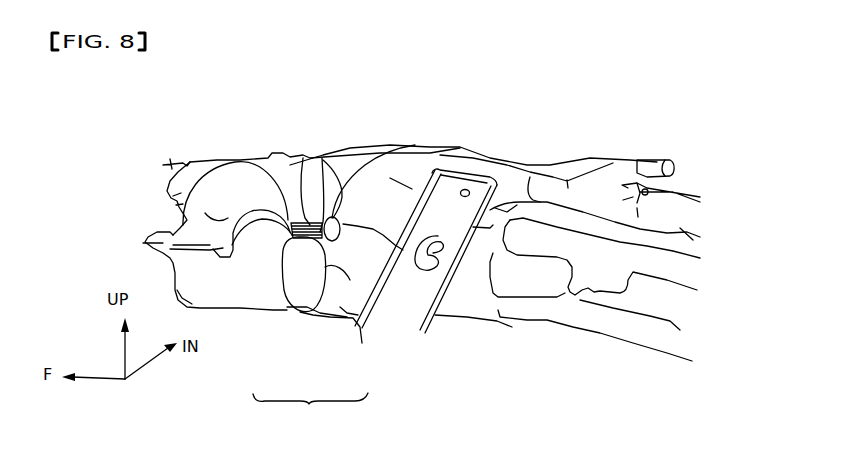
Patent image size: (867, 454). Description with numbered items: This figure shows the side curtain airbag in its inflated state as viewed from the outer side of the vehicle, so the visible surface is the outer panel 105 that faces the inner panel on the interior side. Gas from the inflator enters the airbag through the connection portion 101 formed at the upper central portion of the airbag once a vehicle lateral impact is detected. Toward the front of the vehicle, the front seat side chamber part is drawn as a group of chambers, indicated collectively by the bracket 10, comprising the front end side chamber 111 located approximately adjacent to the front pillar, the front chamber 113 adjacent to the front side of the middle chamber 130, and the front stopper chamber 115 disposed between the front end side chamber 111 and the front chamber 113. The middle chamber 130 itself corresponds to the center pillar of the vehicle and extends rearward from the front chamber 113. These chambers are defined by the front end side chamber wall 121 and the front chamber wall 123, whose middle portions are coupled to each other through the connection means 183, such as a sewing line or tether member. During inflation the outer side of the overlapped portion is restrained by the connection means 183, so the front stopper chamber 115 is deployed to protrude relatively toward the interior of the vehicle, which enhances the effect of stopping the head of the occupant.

The bracket assembly 10 is at (310, 413).
The connection portion 101 is at (652, 170).
The outer panel 105 is at (469, 303).
The front end side chamber 111 is at (255, 282).
The front chamber 113 is at (346, 283).
The front stopper chamber 115 is at (303, 277).
The front end side chamber wall 121 is at (288, 223).
The front chamber wall 123 is at (334, 218).
The middle chamber 130 is at (598, 322).
The connection means 183 is at (323, 223).